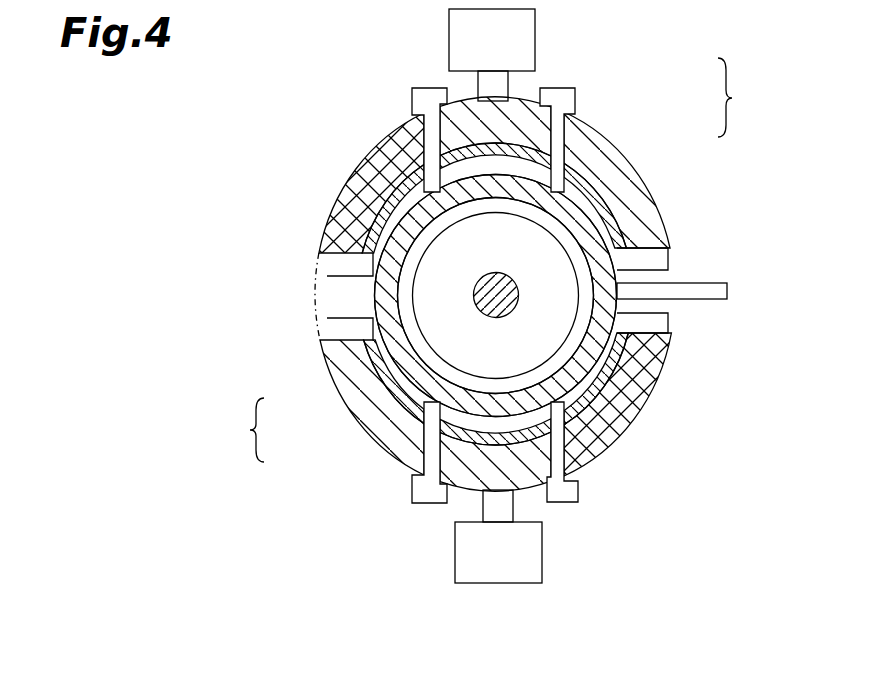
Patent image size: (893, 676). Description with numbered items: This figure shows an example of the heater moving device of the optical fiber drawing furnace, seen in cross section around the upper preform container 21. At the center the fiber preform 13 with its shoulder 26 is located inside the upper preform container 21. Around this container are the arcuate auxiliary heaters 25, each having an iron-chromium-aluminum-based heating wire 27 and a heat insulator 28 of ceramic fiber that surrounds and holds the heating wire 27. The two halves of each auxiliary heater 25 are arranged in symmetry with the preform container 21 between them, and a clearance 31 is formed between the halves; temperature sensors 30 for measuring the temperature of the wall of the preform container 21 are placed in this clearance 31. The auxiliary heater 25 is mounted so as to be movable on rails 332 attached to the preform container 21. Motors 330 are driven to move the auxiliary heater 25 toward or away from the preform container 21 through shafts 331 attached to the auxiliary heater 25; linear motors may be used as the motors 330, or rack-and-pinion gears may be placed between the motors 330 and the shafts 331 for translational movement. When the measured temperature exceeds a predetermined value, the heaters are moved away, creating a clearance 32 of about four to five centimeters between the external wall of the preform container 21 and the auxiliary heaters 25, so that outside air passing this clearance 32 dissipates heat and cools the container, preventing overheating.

The fiber preform 13 is at (374, 205).
The upper preform container 21 is at (638, 378).
The auxiliary heater 25 is at (492, 260).
The shoulder 26 is at (468, 357).
The heating wire 27 is at (577, 116).
The heat insulator 28 is at (612, 153).
The temperature sensor 30 is at (698, 287).
The clearance 31 is at (316, 298).
The clearance 32 is at (463, 362).
The motor 330 is at (537, 25).
The shaft 331 is at (508, 82).
The rail 332 is at (584, 492).